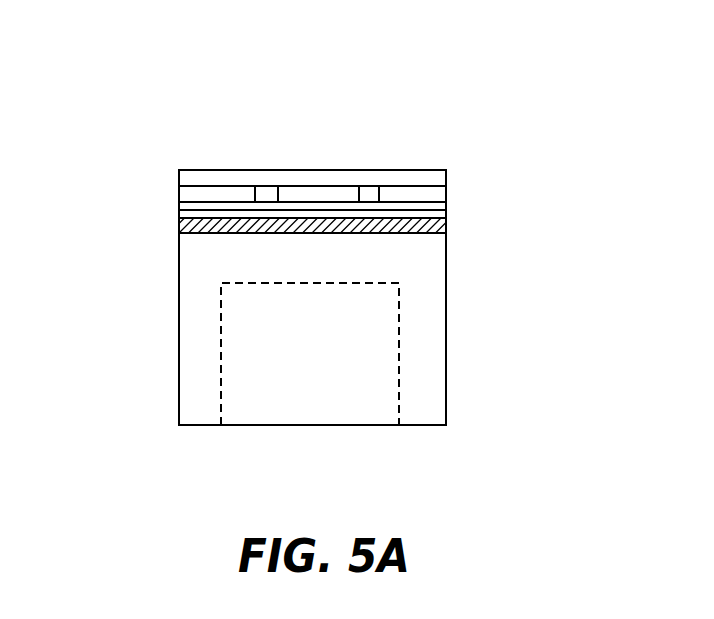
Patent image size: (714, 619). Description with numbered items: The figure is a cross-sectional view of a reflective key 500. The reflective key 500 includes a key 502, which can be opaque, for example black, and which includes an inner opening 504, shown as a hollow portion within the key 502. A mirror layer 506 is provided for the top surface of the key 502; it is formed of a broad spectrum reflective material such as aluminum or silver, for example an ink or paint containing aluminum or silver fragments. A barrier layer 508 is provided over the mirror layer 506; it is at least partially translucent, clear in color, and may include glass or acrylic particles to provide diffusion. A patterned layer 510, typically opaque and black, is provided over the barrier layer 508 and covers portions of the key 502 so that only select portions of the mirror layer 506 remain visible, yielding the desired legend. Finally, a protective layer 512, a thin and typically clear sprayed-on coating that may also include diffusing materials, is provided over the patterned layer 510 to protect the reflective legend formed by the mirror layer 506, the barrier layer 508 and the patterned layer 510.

The reflective key 500 is at (392, 122).
The key 502 is at (446, 347).
The inner opening 504 is at (221, 385).
The mirror layer 506 is at (190, 225).
The barrier layer 508 is at (190, 206).
The patterned layer 510 is at (190, 193).
The protective layer 512 is at (433, 178).